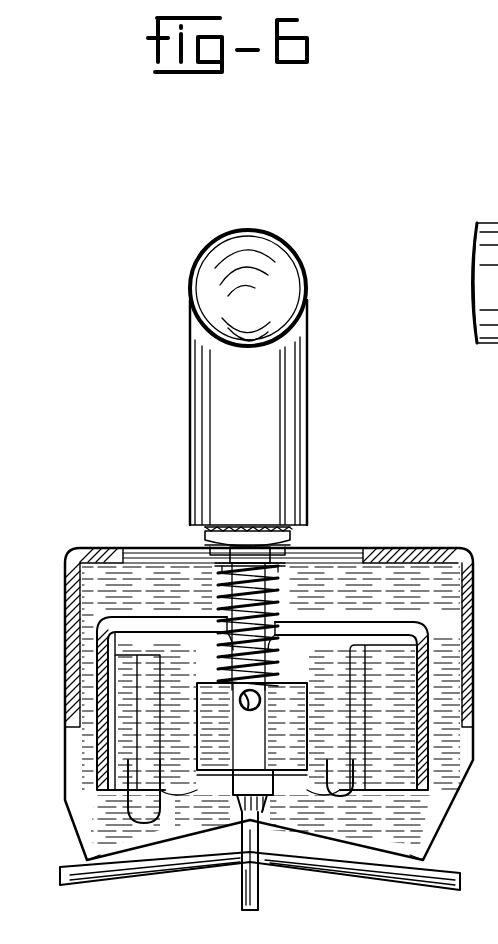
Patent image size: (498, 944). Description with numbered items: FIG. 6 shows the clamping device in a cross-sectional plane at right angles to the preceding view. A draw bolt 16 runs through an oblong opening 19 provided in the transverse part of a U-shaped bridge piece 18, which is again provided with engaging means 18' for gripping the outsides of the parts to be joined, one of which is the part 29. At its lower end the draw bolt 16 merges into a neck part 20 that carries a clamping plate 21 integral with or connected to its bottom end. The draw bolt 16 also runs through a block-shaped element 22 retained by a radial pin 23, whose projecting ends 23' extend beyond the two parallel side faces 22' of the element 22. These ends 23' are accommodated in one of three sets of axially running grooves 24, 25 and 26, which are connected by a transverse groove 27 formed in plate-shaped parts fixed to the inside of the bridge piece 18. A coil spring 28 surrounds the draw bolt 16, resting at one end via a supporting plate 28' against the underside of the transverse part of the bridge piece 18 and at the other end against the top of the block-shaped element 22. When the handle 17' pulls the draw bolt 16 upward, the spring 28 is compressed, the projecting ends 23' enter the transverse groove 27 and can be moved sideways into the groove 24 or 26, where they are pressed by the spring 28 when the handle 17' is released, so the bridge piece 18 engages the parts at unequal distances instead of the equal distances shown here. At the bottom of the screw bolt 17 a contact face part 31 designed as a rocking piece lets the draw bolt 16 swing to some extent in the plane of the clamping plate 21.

The draw bolt 16 is at (277, 590).
The screw bolt 17 is at (274, 431).
The handle 17' is at (276, 288).
The U-shaped bridge piece 18 is at (269, 686).
The engaging means 18' is at (254, 847).
The oblong opening 19 is at (335, 555).
The neck part 20 is at (236, 835).
The clamping plate 21 is at (260, 893).
The block-shaped element 22 is at (162, 691).
The side faces 22' is at (351, 689).
The radial pin 23 is at (329, 714).
The projecting ends of pin 23' is at (232, 682).
The axially running groove 24 is at (128, 785).
The axially running groove 25 is at (292, 777).
The axially running groove 26 is at (357, 777).
The transverse groove 27 is at (297, 717).
The coil spring 28 is at (225, 577).
The supporting plate 28' is at (277, 572).
The part to be clamped 29 is at (402, 870).
The contact face part 31 is at (217, 553).